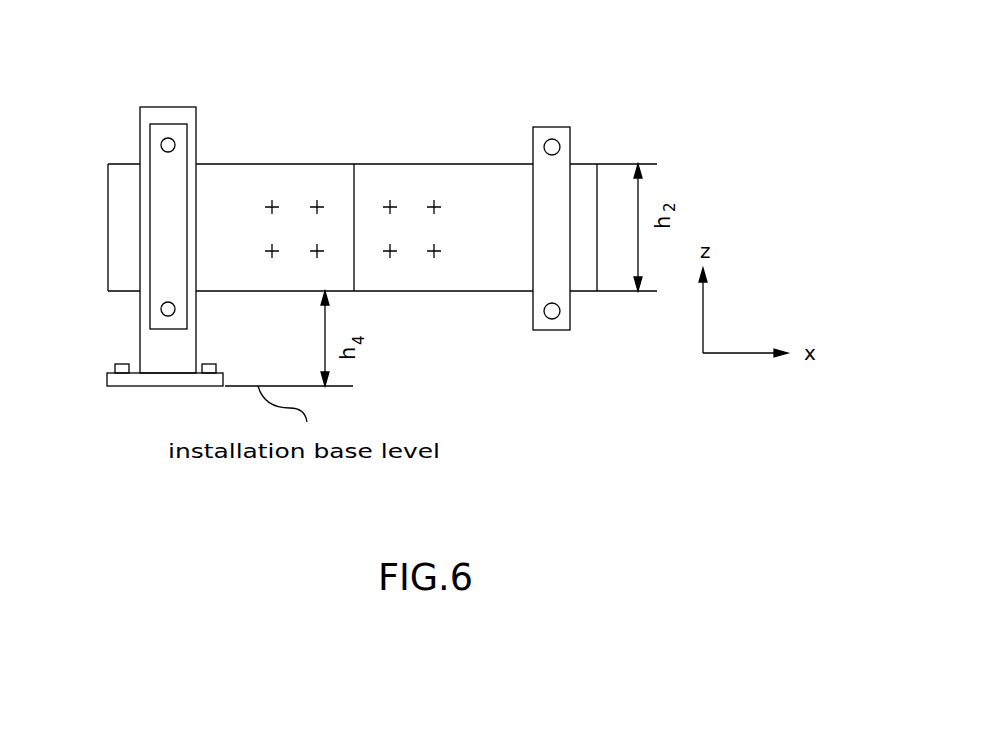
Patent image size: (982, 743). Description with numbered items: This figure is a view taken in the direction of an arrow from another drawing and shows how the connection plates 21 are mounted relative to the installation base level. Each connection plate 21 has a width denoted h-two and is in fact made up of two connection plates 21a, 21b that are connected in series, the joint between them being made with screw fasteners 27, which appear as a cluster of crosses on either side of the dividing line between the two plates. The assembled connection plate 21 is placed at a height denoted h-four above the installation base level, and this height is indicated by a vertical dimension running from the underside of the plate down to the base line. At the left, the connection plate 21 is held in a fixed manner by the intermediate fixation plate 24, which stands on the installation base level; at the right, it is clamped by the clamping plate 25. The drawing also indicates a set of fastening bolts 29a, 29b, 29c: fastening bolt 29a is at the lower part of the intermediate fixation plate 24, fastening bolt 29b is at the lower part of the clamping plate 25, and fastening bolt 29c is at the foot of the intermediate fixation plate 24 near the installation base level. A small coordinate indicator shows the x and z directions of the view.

The connection plate 21 is at (330, 145).
The connection plate 21a is at (238, 175).
The connection plate 21b is at (412, 175).
The intermediate fixation plate 24 is at (174, 107).
The clamping plate 25 is at (554, 127).
The screw fastener 27 is at (390, 257).
The fastening bolt 29a is at (161, 314).
The fastening bolt 29b is at (558, 316).
The fastening bolt 29c is at (212, 364).